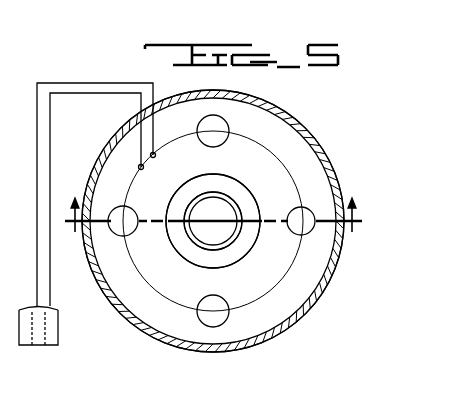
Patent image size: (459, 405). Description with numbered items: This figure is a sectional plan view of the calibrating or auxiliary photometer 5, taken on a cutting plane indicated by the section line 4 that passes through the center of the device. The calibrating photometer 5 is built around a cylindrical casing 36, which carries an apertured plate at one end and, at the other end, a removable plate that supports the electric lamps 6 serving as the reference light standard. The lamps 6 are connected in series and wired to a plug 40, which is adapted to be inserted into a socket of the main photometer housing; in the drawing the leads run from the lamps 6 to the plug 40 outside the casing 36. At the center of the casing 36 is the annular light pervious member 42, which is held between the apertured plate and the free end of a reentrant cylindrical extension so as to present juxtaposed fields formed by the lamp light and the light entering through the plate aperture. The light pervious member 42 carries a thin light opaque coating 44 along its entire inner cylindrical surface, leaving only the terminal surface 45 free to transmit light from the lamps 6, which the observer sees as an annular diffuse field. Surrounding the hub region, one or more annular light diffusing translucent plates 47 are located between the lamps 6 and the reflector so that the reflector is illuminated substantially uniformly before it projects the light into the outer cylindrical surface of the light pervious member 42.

The section line 4- 4 is at (214, 215).
The calibrating photometer 5 is at (309, 130).
The electric lamps 6 is at (200, 144).
The cylindrical casing 36 is at (171, 342).
The plug 40 is at (58, 330).
The annular light pervious member 42 is at (220, 177).
The light opaque coating 44 is at (190, 232).
The terminal surface 45 is at (185, 253).
The annular light diffusing translucent plates 47 is at (301, 284).